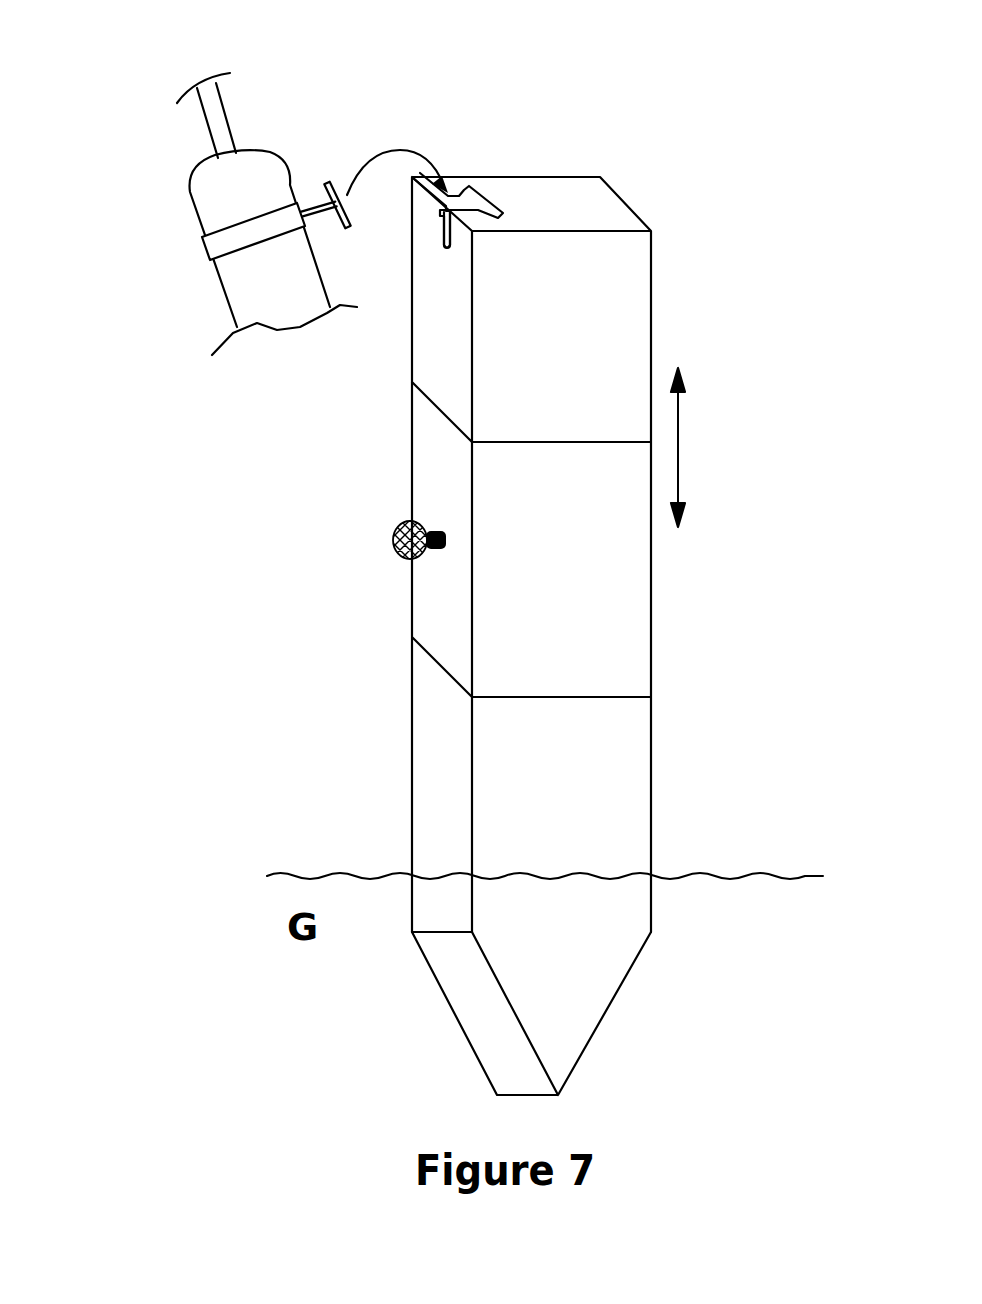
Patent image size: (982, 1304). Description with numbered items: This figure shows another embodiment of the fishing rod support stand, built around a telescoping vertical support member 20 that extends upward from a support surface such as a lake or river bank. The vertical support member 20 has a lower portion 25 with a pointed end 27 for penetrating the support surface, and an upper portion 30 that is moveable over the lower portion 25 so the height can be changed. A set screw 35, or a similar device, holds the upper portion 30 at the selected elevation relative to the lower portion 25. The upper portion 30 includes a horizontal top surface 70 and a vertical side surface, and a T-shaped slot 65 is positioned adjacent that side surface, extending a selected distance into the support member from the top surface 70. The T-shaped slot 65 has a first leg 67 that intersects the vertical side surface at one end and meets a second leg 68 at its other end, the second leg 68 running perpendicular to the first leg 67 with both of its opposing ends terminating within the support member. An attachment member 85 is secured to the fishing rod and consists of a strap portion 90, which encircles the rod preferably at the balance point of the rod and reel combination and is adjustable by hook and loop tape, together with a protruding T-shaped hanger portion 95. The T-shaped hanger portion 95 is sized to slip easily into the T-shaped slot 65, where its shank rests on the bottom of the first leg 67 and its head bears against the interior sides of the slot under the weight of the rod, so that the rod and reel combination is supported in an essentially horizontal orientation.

The vertical support member 20 is at (552, 552).
The lower portion 25 is at (548, 748).
The pointed end 27 is at (540, 983).
The upper portion 30 is at (598, 332).
The set screw 35 is at (392, 541).
The T-shaped slot 65 is at (480, 200).
The first leg 67 is at (446, 237).
The second leg 68 is at (481, 200).
The top surface 70 is at (527, 198).
The attachment member 85 is at (204, 216).
The strap portion 90 is at (222, 242).
The T-shaped hanger portion 95 is at (313, 195).